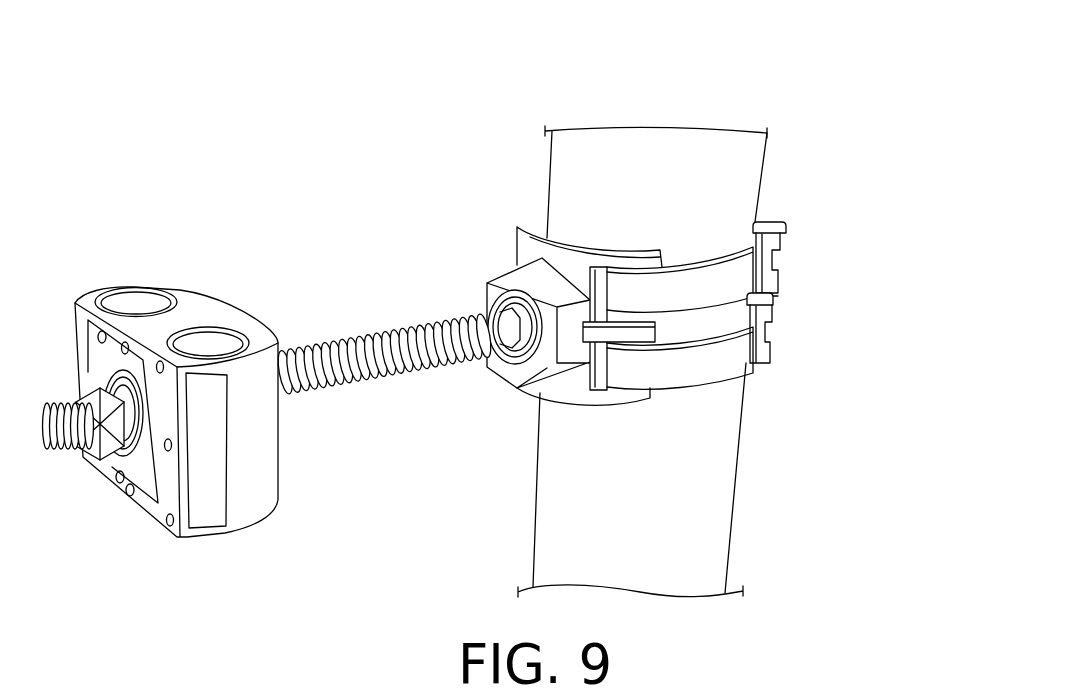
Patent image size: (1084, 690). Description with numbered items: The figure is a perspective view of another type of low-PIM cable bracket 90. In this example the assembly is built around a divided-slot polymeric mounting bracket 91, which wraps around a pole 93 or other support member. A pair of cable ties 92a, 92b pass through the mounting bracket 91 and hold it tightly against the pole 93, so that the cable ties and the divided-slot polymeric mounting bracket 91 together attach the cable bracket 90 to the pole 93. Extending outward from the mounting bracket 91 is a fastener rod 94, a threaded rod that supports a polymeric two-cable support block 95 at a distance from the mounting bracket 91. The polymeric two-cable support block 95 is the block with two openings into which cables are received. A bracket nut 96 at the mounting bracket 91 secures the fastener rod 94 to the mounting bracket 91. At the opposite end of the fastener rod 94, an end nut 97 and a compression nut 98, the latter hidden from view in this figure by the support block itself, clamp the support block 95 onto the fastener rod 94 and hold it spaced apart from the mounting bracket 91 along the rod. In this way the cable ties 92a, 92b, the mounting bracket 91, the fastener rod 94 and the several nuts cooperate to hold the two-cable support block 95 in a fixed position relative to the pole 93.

The low-PIM cable bracket 90 is at (656, 254).
The divided-slot polymeric mounting bracket 91 is at (528, 232).
The cable tie 92a is at (797, 263).
The cable tie 92b is at (808, 320).
The pole 93 is at (710, 517).
The fastener rod 94 is at (367, 320).
The polymeric two-cable support block 95 is at (188, 228).
The bracket nut 96 is at (510, 340).
The end nut 97 is at (103, 443).
The compression nut 98 is at (302, 435).